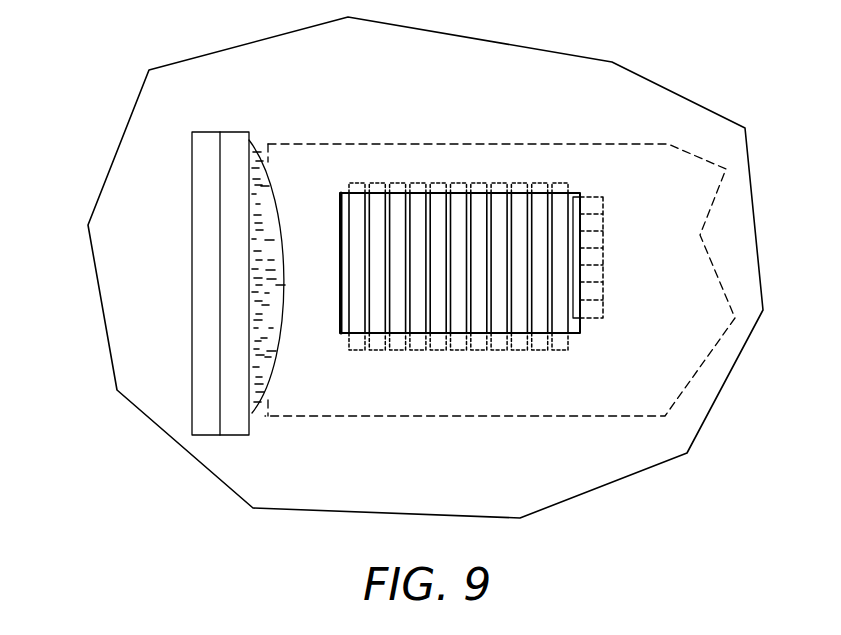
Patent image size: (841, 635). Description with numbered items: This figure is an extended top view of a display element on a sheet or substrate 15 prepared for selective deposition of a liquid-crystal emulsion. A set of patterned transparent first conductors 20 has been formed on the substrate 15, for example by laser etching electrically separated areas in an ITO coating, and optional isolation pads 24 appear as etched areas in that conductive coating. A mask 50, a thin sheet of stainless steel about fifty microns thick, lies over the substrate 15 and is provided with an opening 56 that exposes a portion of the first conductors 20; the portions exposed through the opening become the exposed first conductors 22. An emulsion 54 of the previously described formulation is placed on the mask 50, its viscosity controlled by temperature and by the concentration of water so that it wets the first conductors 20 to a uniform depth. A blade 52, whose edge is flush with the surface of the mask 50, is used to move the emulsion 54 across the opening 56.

The substrate 15 is at (350, 430).
The first conductors 20 is at (542, 183).
The exposed first conductors 22 is at (585, 335).
The isolation pads 24 is at (605, 290).
The mask 50 is at (138, 154).
The blade 52 is at (203, 148).
The emulsion 54 is at (268, 192).
The opening 56 is at (329, 230).